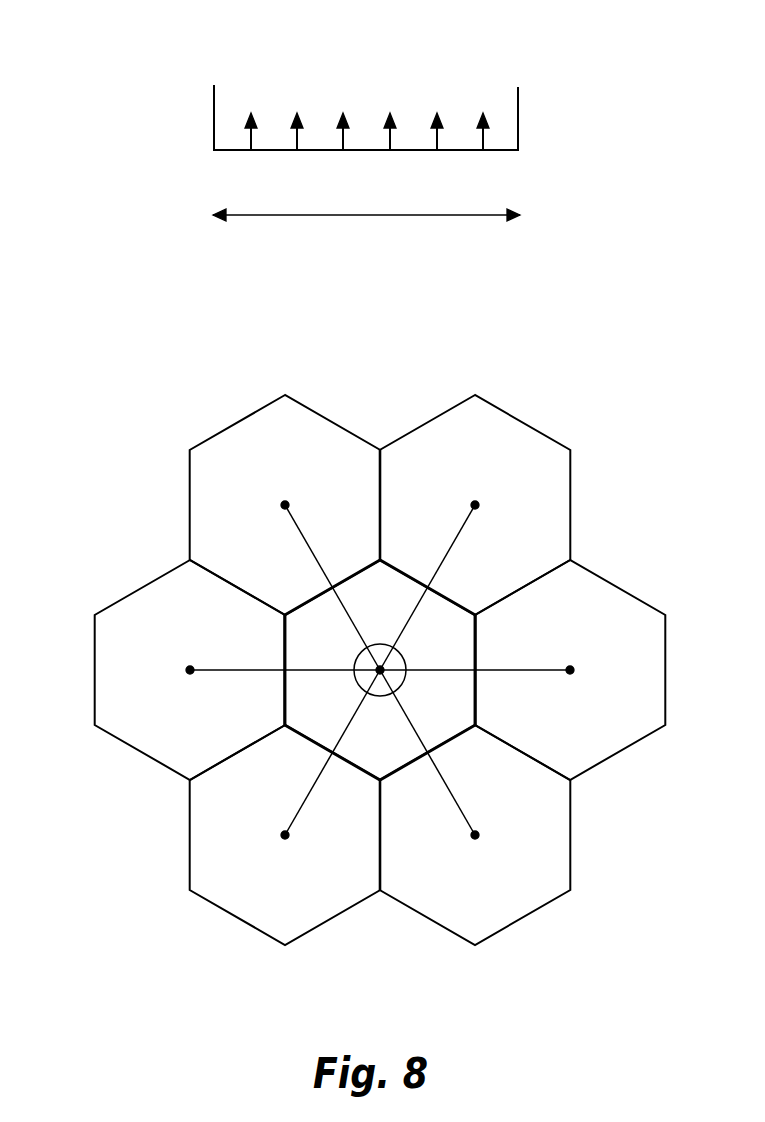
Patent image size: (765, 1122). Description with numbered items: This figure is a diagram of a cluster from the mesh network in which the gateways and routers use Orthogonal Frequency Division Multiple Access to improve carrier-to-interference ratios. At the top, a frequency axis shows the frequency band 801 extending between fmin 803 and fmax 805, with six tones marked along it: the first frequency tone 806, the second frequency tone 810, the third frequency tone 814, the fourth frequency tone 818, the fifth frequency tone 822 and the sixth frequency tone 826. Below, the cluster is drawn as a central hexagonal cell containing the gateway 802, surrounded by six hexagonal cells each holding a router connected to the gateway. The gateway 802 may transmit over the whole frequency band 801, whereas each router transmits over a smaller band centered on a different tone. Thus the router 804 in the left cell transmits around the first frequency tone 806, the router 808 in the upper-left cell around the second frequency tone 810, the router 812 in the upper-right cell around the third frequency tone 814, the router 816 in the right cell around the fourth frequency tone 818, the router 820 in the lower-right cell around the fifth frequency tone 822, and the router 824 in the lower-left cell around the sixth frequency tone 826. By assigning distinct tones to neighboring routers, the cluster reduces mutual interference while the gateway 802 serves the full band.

The frequency band 801 is at (513, 223).
The gateway 802 is at (402, 653).
The fmin 803 is at (180, 72).
The router 804 is at (190, 670).
The fmax 805 is at (567, 78).
The first frequency tone f1 806 is at (252, 110).
The router 808 is at (285, 505).
The second frequency tone f2 810 is at (298, 110).
The router 812 is at (475, 505).
The third frequency tone f3 814 is at (345, 110).
The router 816 is at (570, 670).
The fourth frequency tone f4 818 is at (391, 110).
The router 820 is at (475, 835).
The fifth frequency tone f5 822 is at (439, 110).
The router 824 is at (285, 835).
The sixth frequency tone f6 826 is at (486, 110).